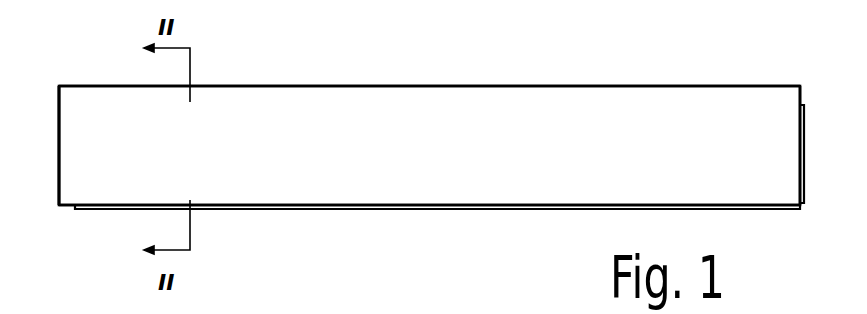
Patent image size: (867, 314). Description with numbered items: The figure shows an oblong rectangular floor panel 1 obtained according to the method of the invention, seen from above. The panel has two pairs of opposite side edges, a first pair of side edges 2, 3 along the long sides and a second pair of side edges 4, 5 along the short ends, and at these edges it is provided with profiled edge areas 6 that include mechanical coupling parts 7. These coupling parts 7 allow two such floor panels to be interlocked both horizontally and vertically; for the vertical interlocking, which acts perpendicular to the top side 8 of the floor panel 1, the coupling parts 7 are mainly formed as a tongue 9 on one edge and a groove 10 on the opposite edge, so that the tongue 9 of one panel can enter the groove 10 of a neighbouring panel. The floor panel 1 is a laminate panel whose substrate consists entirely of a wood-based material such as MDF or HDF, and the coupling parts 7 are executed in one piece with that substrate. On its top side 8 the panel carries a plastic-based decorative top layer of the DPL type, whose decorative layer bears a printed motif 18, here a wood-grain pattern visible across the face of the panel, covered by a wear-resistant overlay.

The floor panel 1 is at (702, 54).
The side edge 2 is at (396, 62).
The side edge 3 is at (383, 230).
The side edge 4 is at (60, 163).
The side edge 5 is at (803, 163).
The profiled edge area 6 is at (60, 112).
The mechanical coupling part 7 is at (285, 86).
The top side 8 is at (312, 137).
The tongue 9 is at (364, 86).
The groove 10 is at (533, 209).
The printed motif 18 is at (576, 86).